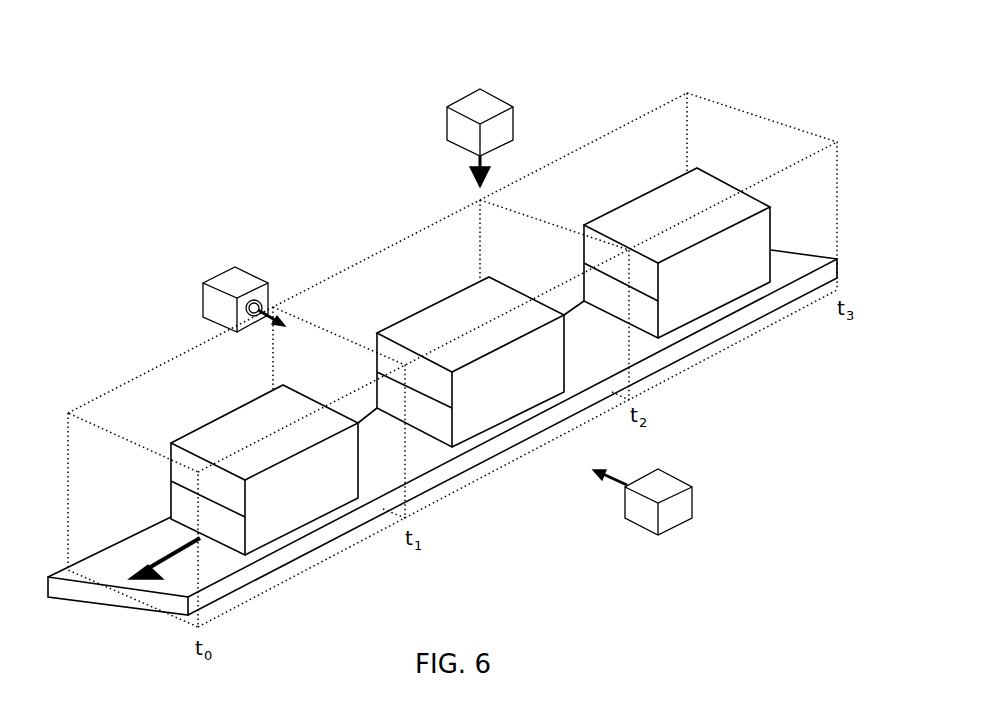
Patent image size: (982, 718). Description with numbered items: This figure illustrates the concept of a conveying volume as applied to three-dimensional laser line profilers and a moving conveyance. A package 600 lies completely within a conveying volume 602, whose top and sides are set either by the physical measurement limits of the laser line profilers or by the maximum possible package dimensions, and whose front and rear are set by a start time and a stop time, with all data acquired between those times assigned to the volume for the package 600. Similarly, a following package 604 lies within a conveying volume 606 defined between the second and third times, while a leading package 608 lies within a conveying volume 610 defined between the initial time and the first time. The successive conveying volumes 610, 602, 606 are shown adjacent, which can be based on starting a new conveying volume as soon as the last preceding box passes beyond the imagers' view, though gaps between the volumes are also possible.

The package 600 is at (495, 388).
The conveying volume 602 is at (343, 270).
The following package 604 is at (691, 280).
The conveying volume 606 is at (737, 109).
The leading package 608 is at (279, 495).
The conveying volume 610 is at (93, 398).